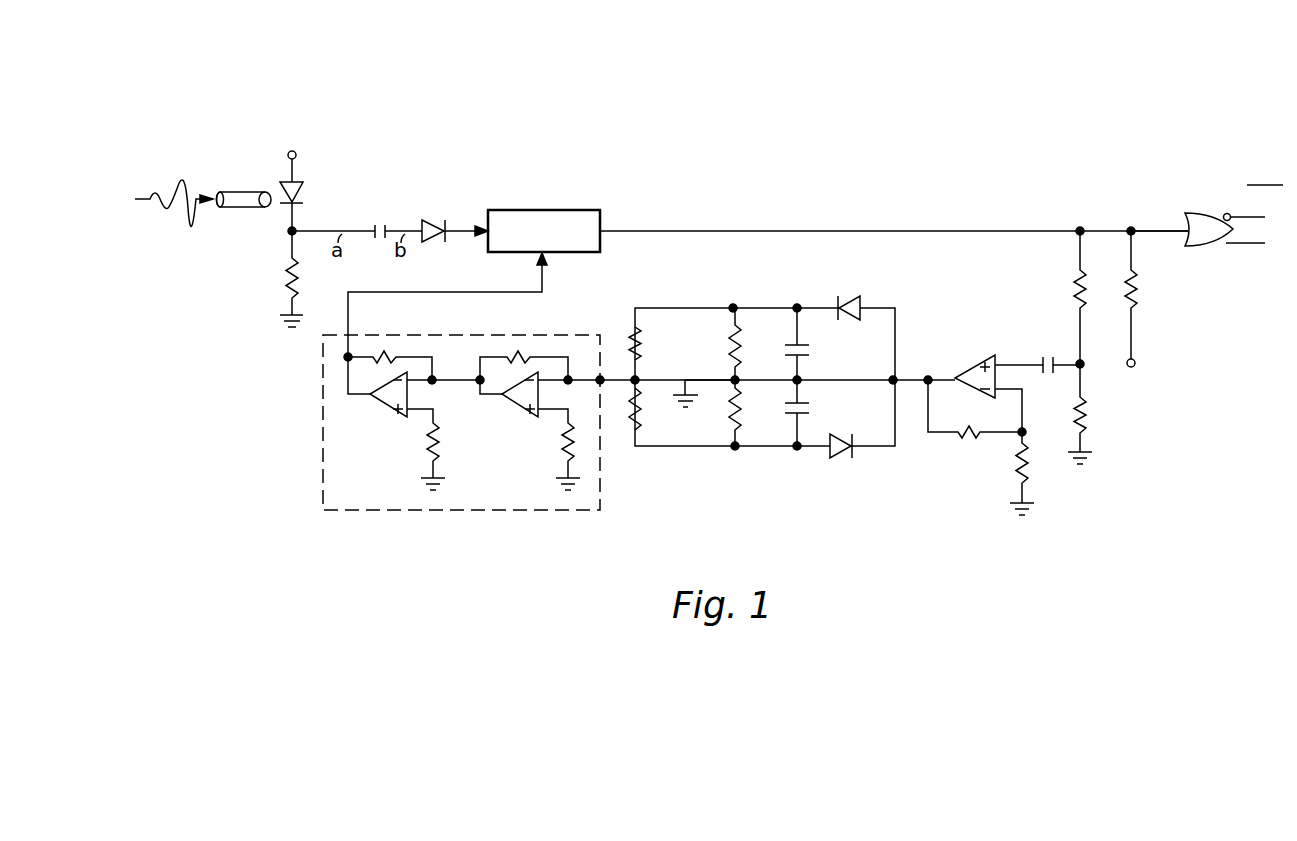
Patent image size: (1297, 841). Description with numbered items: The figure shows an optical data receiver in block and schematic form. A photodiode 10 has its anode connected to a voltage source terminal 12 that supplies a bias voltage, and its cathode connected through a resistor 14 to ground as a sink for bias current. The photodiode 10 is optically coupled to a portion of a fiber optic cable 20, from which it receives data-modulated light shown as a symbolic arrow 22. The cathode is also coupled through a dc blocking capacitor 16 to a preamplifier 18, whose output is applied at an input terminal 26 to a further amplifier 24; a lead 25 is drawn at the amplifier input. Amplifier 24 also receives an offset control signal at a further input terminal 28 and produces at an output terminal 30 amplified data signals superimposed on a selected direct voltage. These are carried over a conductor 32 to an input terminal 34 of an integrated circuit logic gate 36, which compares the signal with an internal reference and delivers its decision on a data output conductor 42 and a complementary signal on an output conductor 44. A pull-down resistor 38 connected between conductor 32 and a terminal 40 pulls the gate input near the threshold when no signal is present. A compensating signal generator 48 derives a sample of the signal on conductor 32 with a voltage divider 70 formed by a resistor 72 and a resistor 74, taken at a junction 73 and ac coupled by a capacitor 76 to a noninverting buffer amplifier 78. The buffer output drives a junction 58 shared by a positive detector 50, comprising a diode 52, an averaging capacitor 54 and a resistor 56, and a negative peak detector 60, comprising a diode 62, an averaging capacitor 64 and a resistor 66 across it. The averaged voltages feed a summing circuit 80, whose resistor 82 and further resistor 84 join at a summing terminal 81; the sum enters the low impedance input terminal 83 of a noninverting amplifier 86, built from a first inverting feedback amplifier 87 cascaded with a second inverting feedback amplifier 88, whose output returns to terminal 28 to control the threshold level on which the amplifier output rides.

The photodiode 10 is at (305, 189).
The voltage source terminal 12 is at (288, 155).
The resistor 14 is at (287, 272).
The dc blocking capacitor 16 is at (378, 222).
The preamplifier 18 is at (431, 218).
The fiber optic cable 20 is at (250, 208).
The symbolic arrow 22 is at (179, 188).
The amplifier 24 is at (563, 210).
The amplifier input lead 25 is at (462, 227).
The input terminal 26 is at (480, 236).
The further input terminal 28 is at (544, 256).
The output terminal 30 is at (602, 233).
The conductor 32 is at (780, 228).
The input terminal 34 is at (1187, 222).
The integrated circuit logic gate 36 is at (1209, 212).
The pull-down resistor 38 is at (1137, 292).
The terminal 40 is at (1135, 363).
The data output conductor 42 is at (1226, 247).
The output conductor 44 is at (1252, 217).
The compensating signal generator 48 is at (700, 532).
The positive detector 50 is at (811, 290).
The diode 52 is at (848, 294).
The averaging capacitor 54 is at (816, 349).
The resistor 56 is at (728, 347).
The junction 58 is at (898, 378).
The negative peak detector 60 is at (791, 495).
The diode 62 is at (843, 458).
The averaging capacitor 64 is at (816, 410).
The resistor 66 is at (731, 421).
The voltage divider 70 is at (1080, 345).
The resistor 72 is at (1074, 295).
The junction 73 is at (1084, 364).
The resistor 74 is at (1088, 418).
The capacitor 76 is at (1044, 353).
The noninverting buffer amplifier 78 is at (979, 482).
The summing circuit 80 is at (674, 396).
The summing terminal 81 is at (626, 382).
The resistor 82 is at (642, 354).
The input terminal 83 is at (603, 379).
The further resistor 84 is at (642, 422).
The noninverting amplifier 86 is at (505, 483).
The first inverting feedback amplifier 87 is at (512, 407).
The second inverting feedback amplifier 88 is at (374, 407).